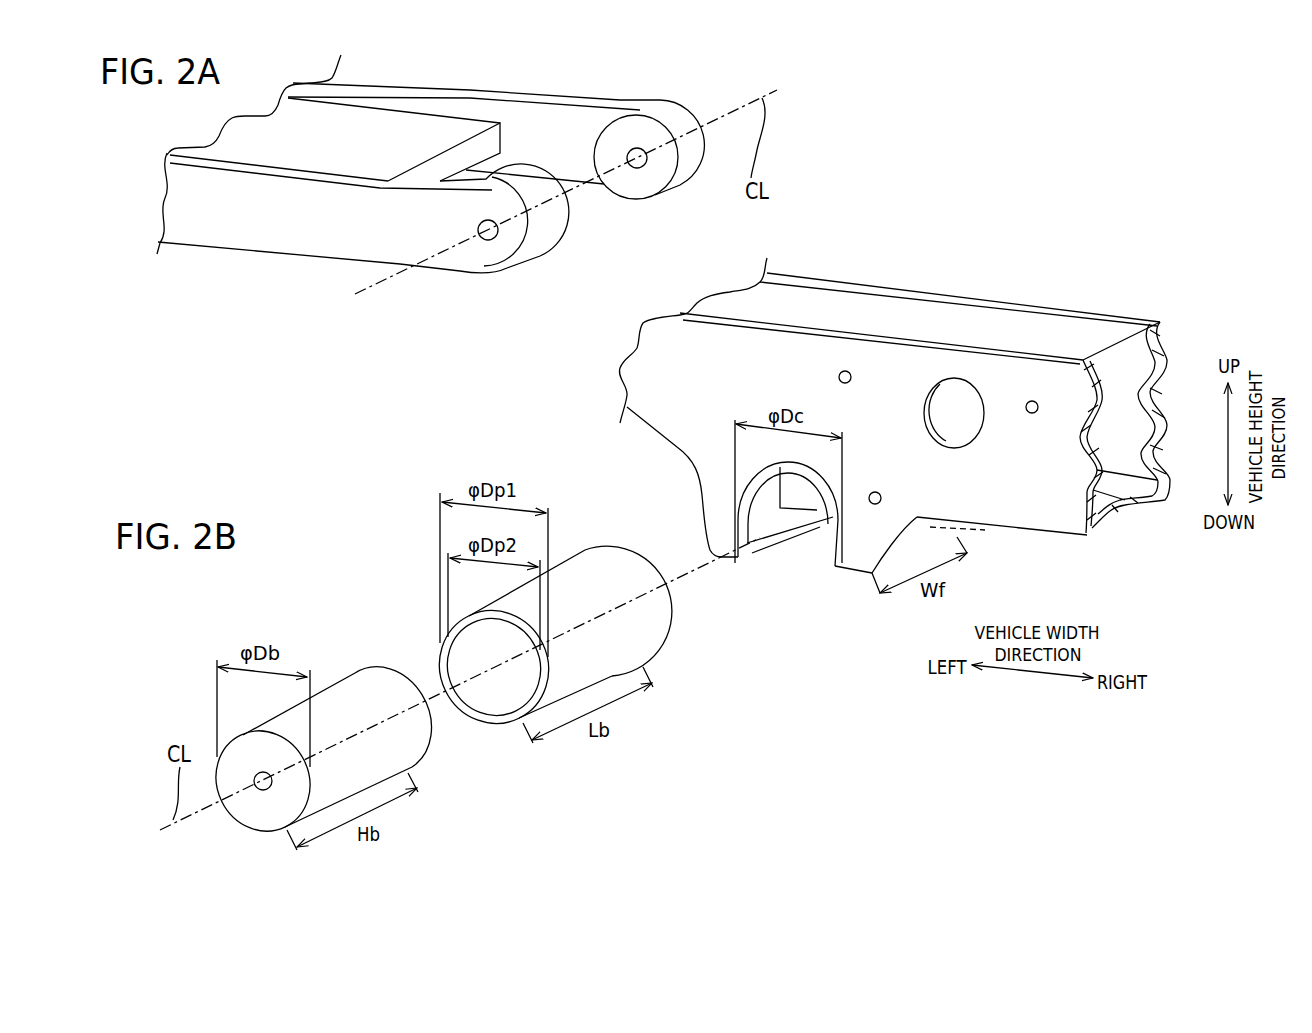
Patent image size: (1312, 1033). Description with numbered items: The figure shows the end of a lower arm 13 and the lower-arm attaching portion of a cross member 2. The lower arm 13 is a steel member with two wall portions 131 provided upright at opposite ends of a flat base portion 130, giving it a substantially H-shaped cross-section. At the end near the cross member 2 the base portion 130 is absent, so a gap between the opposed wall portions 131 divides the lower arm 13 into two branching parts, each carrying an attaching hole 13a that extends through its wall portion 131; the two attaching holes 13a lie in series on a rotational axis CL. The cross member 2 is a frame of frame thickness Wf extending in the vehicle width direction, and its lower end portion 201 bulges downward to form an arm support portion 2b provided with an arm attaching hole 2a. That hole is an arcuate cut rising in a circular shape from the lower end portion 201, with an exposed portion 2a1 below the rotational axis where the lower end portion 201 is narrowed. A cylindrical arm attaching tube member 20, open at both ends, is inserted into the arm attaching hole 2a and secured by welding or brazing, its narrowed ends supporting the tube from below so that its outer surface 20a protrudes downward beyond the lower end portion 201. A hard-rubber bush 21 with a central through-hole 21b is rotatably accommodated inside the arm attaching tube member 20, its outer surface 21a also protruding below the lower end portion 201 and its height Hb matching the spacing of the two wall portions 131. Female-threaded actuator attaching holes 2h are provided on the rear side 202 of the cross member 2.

In FIG. 2A, the lower arm 13 is at (245, 246).
In FIG. 2A, the base portion 130 is at (400, 123).
In FIG. 2A, the wall portions 131 is at (557, 102).
In FIG. 2A, the attaching holes 13a is at (637, 168).
In FIG. 2B, the cross member 2 is at (680, 408).
In FIG. 2B, the actuator attaching holes 2h is at (849, 383).
In FIG. 2B, the arm attaching hole 2a is at (825, 553).
In FIG. 2B, the exposed portion 2a1 is at (790, 552).
In FIG. 2B, the arm support portion 2b is at (728, 560).
In FIG. 2B, the arm attaching tube member 20 is at (580, 555).
In FIG. 2B, the outer surface of the arm attaching tube member 20a is at (647, 623).
In FIG. 2B, the bush 21 is at (333, 683).
In FIG. 2B, the outer surface of the bush 21a is at (408, 740).
In FIG. 2B, the through-hole 21b is at (263, 788).
In FIG. 2B, the lower end portion 201 is at (967, 521).
In FIG. 2B, the rear side 202 is at (1053, 497).